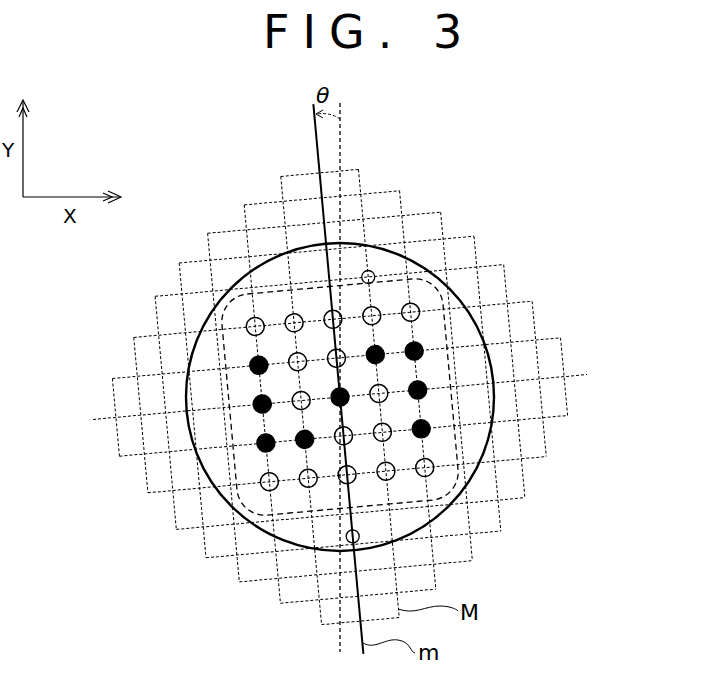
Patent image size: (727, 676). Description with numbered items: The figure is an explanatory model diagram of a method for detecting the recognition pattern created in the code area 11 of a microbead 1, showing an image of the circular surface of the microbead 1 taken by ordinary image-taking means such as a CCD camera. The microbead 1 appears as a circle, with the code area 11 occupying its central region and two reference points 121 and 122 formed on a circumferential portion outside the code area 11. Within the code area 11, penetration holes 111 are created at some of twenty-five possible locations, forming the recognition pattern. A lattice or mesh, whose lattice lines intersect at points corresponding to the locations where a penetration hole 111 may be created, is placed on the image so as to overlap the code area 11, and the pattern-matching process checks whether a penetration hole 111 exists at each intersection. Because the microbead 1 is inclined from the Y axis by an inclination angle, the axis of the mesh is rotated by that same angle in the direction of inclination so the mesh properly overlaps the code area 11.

The microbead 1 is at (462, 297).
The code area 11 is at (240, 505).
The penetration hole 111 is at (425, 433).
The reference point 121 is at (346, 542).
The reference point 122 is at (370, 272).